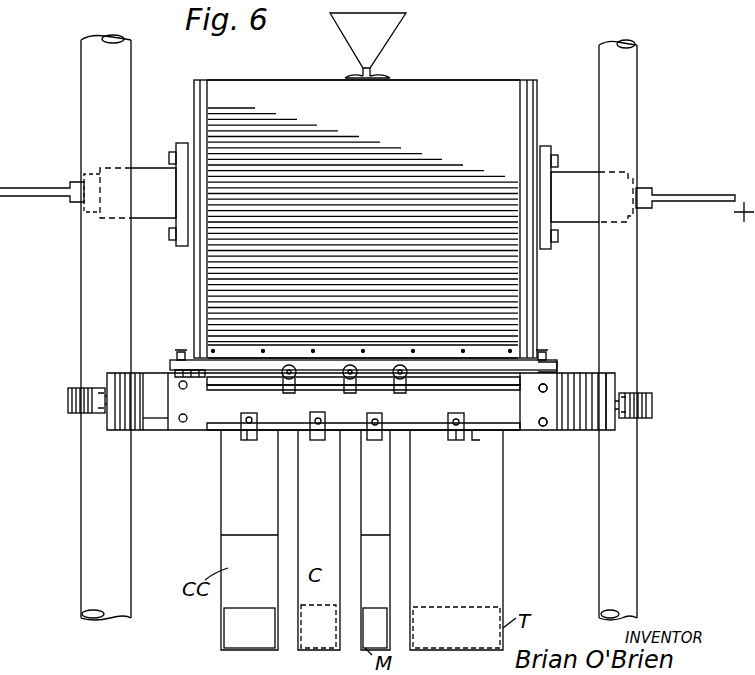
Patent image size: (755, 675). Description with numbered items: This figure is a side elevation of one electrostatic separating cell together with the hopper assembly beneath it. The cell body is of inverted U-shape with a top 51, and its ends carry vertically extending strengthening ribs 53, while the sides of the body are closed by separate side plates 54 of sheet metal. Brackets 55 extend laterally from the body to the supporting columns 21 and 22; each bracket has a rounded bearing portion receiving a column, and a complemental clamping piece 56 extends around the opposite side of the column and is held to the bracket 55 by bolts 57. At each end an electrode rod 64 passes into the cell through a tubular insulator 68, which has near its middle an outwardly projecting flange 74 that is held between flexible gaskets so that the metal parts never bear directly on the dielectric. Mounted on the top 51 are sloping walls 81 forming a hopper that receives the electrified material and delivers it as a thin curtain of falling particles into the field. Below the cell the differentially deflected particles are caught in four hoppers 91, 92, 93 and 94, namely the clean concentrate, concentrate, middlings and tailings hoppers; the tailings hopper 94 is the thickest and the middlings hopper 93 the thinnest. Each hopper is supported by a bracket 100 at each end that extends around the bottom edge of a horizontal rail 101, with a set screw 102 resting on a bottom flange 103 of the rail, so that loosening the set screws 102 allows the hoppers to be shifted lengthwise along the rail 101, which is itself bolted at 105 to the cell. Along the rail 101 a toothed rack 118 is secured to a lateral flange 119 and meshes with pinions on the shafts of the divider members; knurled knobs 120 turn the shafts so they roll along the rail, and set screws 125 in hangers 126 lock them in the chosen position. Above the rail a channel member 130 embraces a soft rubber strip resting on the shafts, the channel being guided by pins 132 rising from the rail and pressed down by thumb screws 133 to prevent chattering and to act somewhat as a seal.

The column 21 is at (632, 160).
The column 22 is at (126, 78).
The top 51 is at (363, 97).
The strengthening ribs 53 is at (538, 104).
The side plates 54 is at (363, 233).
The brackets 55 is at (155, 380).
The clamping piece 56 is at (72, 410).
The bolts 57 is at (85, 388).
The rod 64 is at (33, 188).
The tubular insulator 68 is at (154, 172).
The flange 74 is at (180, 143).
The sloping walls 81 is at (398, 35).
The hopper 91 is at (221, 493).
The hopper 92 is at (319, 540).
The hopper 93 is at (375, 540).
The hopper 94 is at (456, 540).
The bracket 100 is at (252, 440).
The rail 101 is at (365, 413).
The set screw 102 is at (255, 421).
The bottom flange 103 is at (490, 440).
The bolts 105 is at (548, 384).
The toothed rack 118 is at (260, 383).
The lateral flange 119 is at (218, 380).
The knurled knob 120 is at (406, 393).
The set screws 125 is at (290, 393).
The hangers 126 is at (352, 393).
The channel member 130 is at (534, 312).
The guiding pins 132 is at (180, 350).
The thumb screws 133 is at (188, 360).